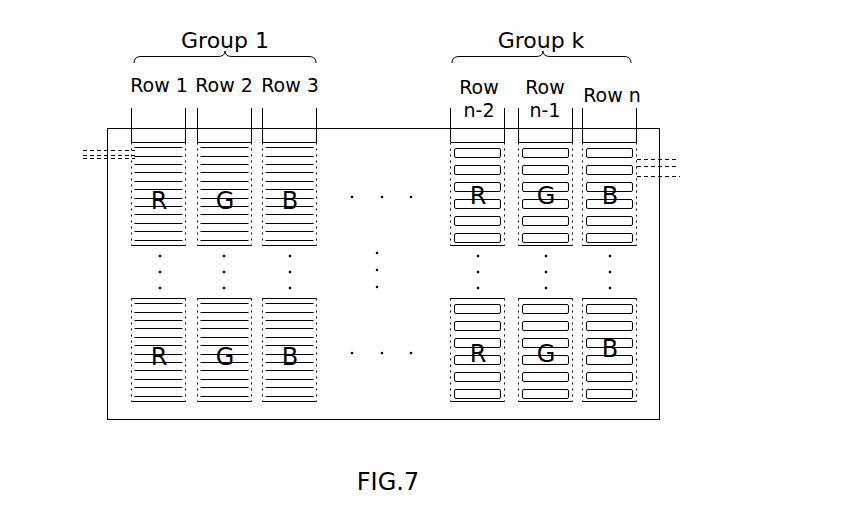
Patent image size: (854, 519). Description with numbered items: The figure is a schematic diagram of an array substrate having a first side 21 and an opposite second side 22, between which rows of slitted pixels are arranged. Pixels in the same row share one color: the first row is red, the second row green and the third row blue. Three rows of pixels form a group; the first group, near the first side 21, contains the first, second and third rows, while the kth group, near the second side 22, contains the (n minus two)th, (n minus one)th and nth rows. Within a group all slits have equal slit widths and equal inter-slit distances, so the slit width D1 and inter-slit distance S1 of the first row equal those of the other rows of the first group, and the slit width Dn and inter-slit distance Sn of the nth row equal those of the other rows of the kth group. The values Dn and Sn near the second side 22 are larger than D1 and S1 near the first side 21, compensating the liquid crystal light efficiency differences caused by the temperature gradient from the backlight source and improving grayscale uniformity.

The first side 21 is at (107, 272).
The second side 22 is at (660, 272).
The slit width in the first row of pixels D1 is at (90, 140).
The inter-slit distance in the first row of pixels S1 is at (100, 153).
The slit width in the nth row of pixels Dn is at (666, 140).
The inter-slit distance in the nth row of pixels Sn is at (676, 160).